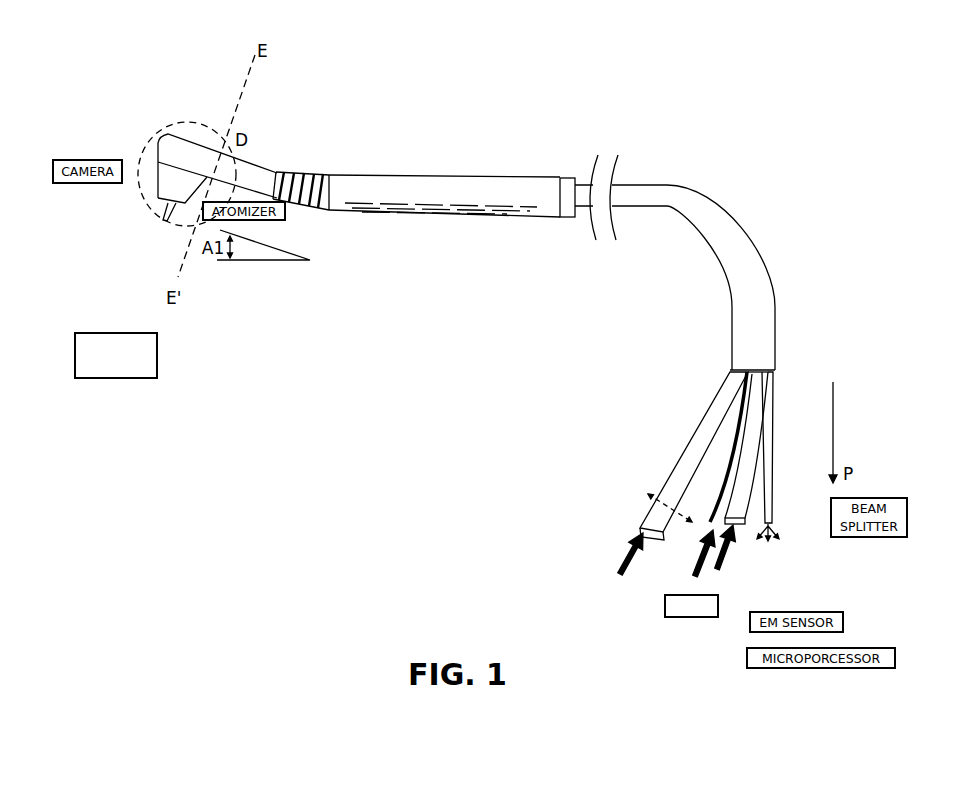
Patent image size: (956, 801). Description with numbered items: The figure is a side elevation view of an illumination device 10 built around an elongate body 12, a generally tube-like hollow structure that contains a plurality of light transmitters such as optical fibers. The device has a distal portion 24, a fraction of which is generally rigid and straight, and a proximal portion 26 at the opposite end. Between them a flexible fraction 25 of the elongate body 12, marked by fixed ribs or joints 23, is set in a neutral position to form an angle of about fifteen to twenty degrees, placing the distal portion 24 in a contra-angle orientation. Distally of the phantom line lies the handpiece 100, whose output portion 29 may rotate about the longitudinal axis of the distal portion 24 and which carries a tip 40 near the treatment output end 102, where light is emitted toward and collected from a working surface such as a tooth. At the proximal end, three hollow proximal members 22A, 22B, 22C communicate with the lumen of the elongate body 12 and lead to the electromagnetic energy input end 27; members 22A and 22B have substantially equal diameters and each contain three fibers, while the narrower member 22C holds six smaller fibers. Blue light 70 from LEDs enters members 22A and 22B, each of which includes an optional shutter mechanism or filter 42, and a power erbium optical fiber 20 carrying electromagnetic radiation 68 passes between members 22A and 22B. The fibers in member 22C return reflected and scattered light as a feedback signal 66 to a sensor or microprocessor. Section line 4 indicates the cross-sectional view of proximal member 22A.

The illumination device 10 is at (360, 128).
The elongate body 12 is at (437, 176).
The optical fiber 20 is at (730, 466).
The proximal member 22A is at (710, 407).
The proximal member 22B is at (757, 503).
The proximal member 22C is at (770, 508).
The fixed ribs or joints 23 is at (273, 205).
The distal portion 24 is at (248, 76).
The flexible fraction of elongate body 25 is at (331, 168).
The proximal portion 26 is at (575, 363).
The electromagnetic energy input end 27 is at (732, 608).
The output portion 29 is at (182, 125).
The tip 40 is at (164, 206).
The shutter mechanism or filter 42 is at (638, 531).
The section line 4-4' 4 is at (670, 509).
The feedback signal 66 is at (783, 541).
The electromagnetic radiation 68 is at (700, 570).
The blue light 70 is at (626, 567).
The handpiece 100 is at (209, 80).
The treatment output end 102 is at (162, 247).